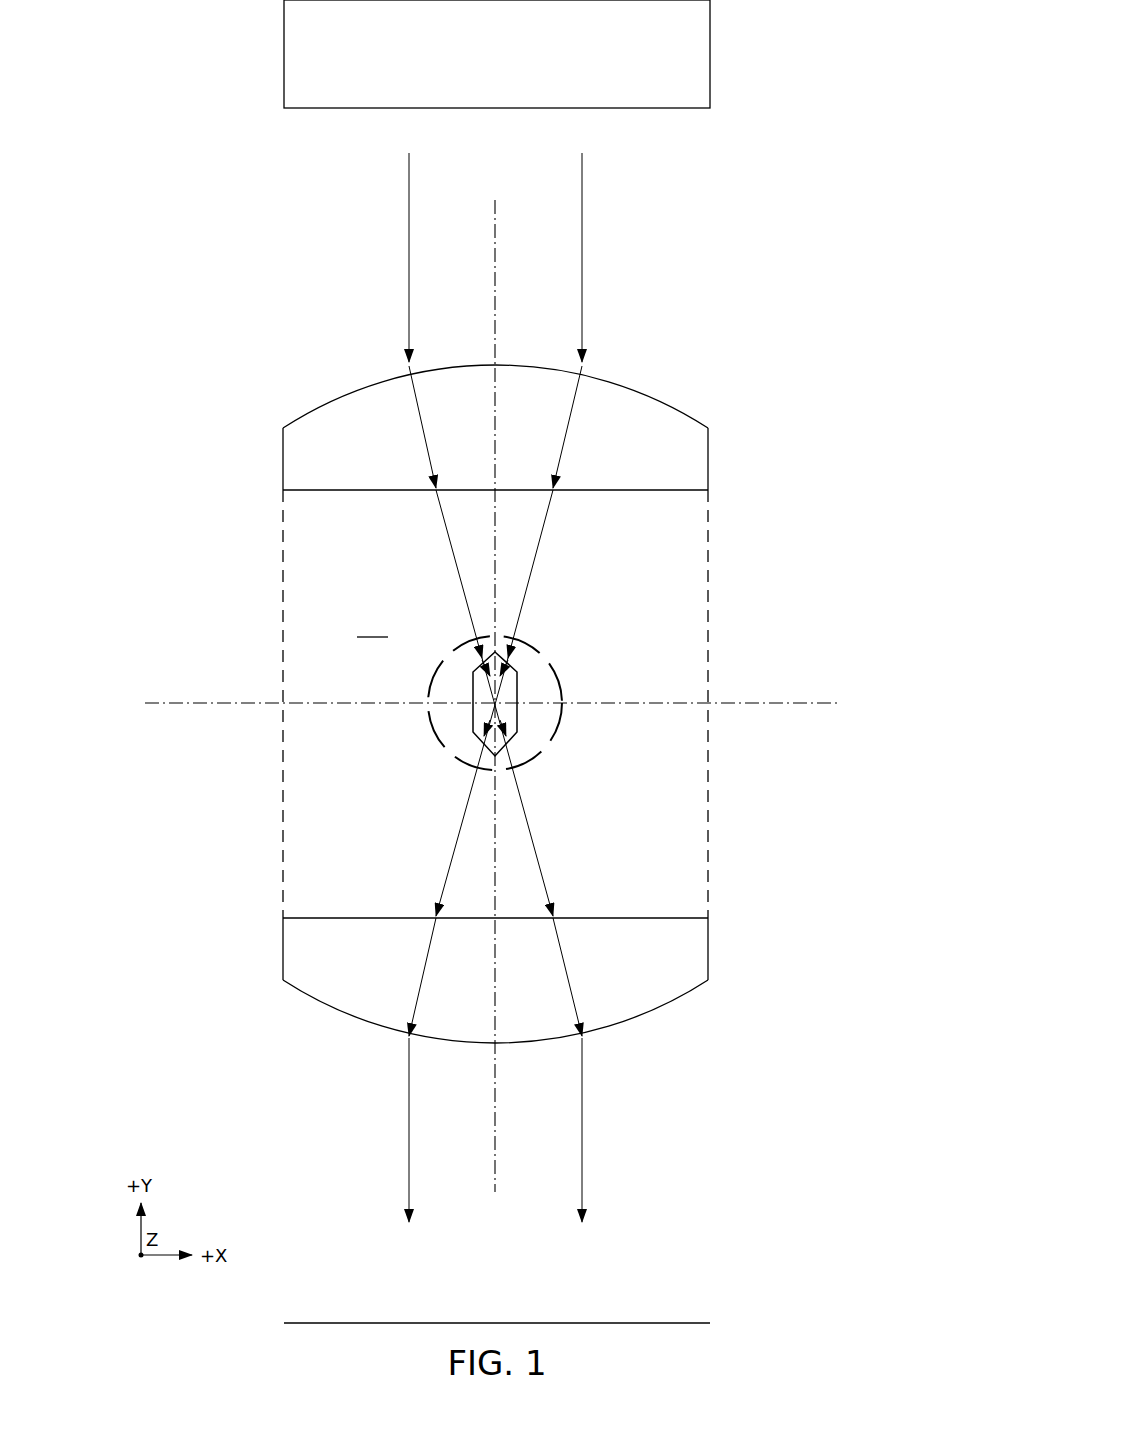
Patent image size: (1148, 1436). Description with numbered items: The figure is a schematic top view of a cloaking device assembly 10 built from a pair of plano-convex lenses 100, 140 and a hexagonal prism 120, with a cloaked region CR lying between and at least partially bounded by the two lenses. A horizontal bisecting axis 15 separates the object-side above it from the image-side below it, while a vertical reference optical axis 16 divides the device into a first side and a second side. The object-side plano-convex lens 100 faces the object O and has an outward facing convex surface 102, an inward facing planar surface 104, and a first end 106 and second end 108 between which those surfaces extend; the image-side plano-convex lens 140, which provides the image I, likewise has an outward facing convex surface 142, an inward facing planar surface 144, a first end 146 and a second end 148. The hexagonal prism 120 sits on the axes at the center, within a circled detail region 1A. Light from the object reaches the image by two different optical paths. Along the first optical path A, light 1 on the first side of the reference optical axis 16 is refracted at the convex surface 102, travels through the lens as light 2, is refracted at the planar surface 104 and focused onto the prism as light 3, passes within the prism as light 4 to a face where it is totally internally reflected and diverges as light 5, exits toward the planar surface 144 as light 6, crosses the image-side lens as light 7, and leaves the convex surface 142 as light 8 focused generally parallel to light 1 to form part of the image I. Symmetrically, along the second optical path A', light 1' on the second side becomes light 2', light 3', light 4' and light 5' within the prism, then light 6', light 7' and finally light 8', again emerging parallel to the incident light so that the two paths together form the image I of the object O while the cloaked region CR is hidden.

The cloaking device assembly 10 is at (808, 228).
The object-side plano-convex lens 100 is at (493, 430).
The outward facing convex surface 102 is at (628, 378).
The inward facing planar surface 104 is at (632, 492).
The first end 106 is at (710, 462).
The second end 108 is at (283, 466).
The hexagonal prism 120 is at (520, 745).
The image-side plano-convex lens 140 is at (493, 989).
The outward facing convex surface 142 is at (654, 1040).
The inward facing planar surface 144 is at (622, 917).
The first end 146 is at (710, 948).
The second end 148 is at (283, 948).
The bisecting axis 15 is at (820, 703).
The reference optical axis 16 is at (497, 222).
The light 1 is at (601, 257).
The light 1' is at (385, 257).
The light 2 is at (582, 427).
The light 2' is at (404, 427).
The light 3 is at (546, 574).
The light 3' is at (439, 574).
The light 4 is at (463, 680).
The light 4' is at (525, 679).
The light 5 is at (463, 723).
The light 5' is at (525, 721).
The light 6 is at (529, 787).
The light 6' is at (460, 787).
The light 7 is at (582, 977).
The light 7' is at (405, 977).
The light 8 is at (601, 1130).
The light 8' is at (384, 1130).
The detail region 1A is at (563, 683).
The object O is at (488, 68).
The cloaked region CR is at (373, 624).
The image I is at (663, 1322).
The first optical path A is at (593, 150).
The second optical path A' is at (395, 150).